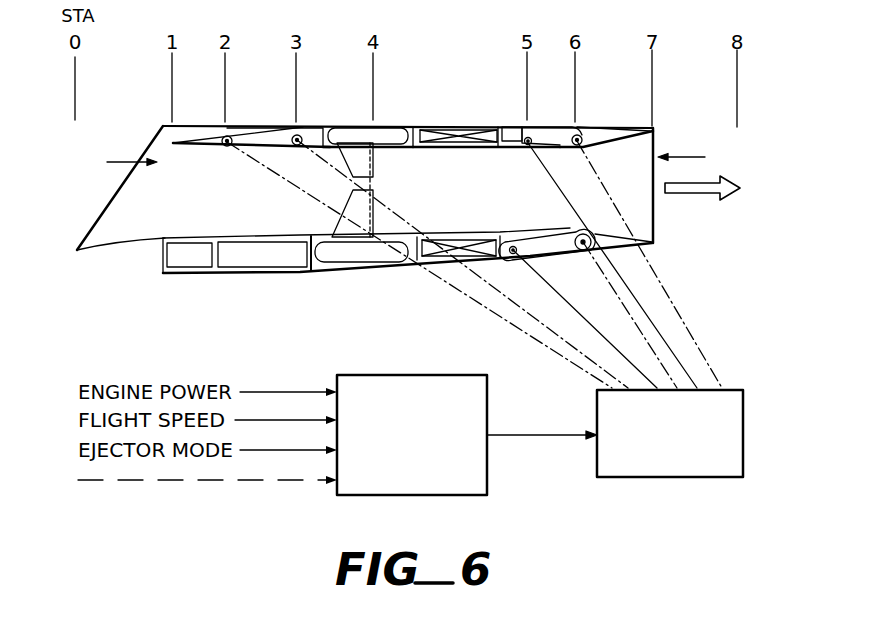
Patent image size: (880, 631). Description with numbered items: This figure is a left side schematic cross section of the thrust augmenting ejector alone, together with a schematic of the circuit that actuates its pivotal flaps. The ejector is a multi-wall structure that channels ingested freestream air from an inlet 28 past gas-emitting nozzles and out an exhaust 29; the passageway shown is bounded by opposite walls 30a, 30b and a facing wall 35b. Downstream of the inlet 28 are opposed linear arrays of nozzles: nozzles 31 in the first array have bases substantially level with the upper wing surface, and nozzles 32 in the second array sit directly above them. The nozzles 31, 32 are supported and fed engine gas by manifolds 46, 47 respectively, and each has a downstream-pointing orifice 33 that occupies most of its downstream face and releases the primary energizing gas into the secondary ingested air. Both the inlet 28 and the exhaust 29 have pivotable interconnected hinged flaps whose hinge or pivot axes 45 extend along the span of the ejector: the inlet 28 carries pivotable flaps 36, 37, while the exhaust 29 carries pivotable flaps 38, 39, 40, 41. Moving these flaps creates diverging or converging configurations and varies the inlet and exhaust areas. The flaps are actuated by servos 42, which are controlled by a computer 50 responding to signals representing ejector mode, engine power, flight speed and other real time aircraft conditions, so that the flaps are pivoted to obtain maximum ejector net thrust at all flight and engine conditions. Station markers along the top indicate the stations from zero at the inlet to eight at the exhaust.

The inlet 28 is at (116, 163).
The exhaust 29 is at (700, 173).
The opposite wall 30a is at (440, 153).
The opposite wall 30b is at (286, 233).
The nozzle 31 is at (398, 262).
The nozzle 32 is at (360, 160).
The orifice 33 is at (375, 155).
The facing wall 35b is at (148, 215).
The inlet flap 36 is at (187, 135).
The inlet flap 37 is at (264, 134).
The exhaust flap 38 is at (550, 132).
The exhaust flap 39 is at (620, 133).
The exhaust flap 40 is at (567, 247).
The exhaust flap 41 is at (620, 247).
The servos 42 is at (597, 462).
The hinge or pivot axis 45 is at (293, 145).
The manifold 46 is at (358, 257).
The manifold 47 is at (352, 130).
The computer 50 is at (488, 396).